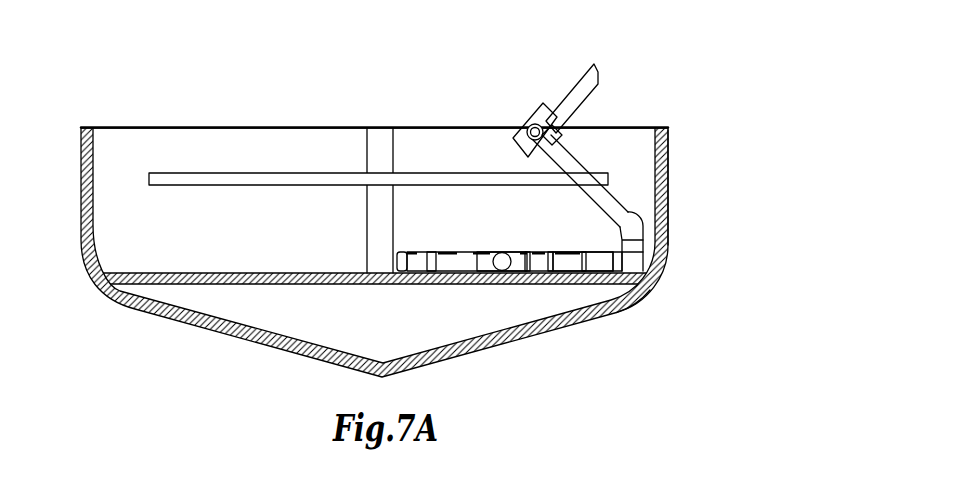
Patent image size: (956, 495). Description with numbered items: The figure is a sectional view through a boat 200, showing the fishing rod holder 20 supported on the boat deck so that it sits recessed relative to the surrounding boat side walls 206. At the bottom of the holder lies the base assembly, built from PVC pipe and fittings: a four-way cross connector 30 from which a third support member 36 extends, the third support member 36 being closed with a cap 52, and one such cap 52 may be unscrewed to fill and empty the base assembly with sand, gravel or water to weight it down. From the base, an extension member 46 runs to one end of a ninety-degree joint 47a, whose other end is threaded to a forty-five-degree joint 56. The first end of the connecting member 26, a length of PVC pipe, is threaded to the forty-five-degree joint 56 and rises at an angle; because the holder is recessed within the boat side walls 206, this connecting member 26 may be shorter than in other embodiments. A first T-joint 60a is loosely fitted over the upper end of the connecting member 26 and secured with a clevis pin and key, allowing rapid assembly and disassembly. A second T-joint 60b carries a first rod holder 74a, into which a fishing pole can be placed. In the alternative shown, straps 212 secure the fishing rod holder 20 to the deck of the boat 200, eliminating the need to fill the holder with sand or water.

The boat 200 is at (405, 223).
The fishing rod holder 20 is at (553, 216).
The boat side walls 206 is at (669, 183).
The connecting member 26 is at (567, 165).
The 45-degree joint 56 is at (633, 230).
The extension member 46 is at (587, 266).
The 90-degree joint 47a is at (630, 301).
The four-way cross connector 30 is at (502, 274).
The straps 212 is at (437, 276).
The cap 52 is at (409, 252).
The third support member 36 is at (446, 262).
The first T-joint 60a is at (530, 126).
The second T-joint 60b is at (551, 120).
The first rod holder 74a is at (594, 78).